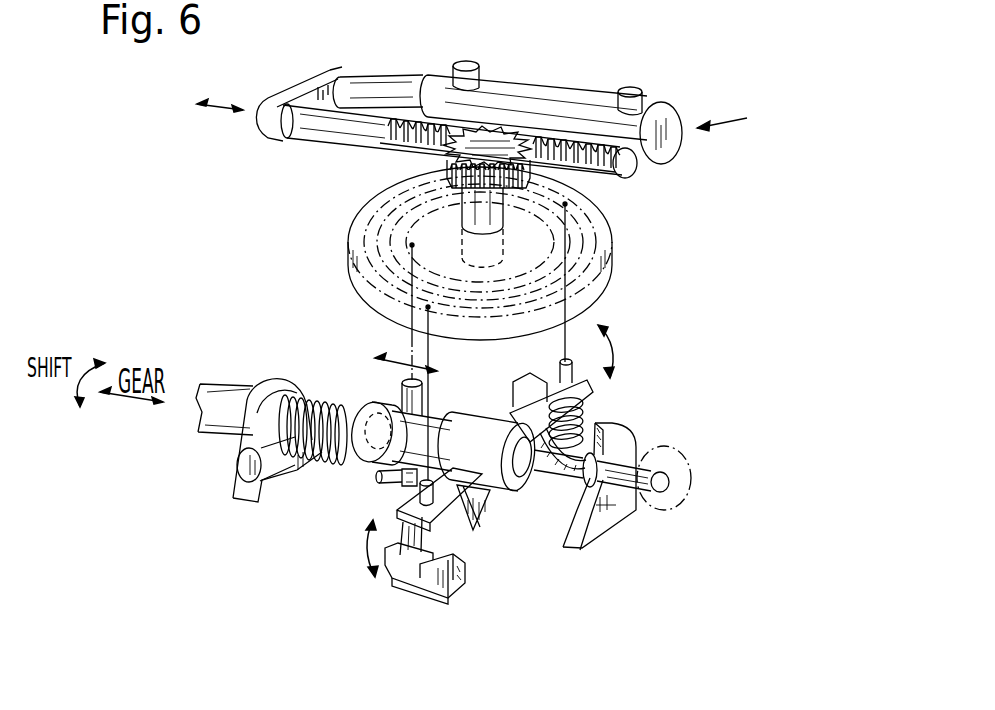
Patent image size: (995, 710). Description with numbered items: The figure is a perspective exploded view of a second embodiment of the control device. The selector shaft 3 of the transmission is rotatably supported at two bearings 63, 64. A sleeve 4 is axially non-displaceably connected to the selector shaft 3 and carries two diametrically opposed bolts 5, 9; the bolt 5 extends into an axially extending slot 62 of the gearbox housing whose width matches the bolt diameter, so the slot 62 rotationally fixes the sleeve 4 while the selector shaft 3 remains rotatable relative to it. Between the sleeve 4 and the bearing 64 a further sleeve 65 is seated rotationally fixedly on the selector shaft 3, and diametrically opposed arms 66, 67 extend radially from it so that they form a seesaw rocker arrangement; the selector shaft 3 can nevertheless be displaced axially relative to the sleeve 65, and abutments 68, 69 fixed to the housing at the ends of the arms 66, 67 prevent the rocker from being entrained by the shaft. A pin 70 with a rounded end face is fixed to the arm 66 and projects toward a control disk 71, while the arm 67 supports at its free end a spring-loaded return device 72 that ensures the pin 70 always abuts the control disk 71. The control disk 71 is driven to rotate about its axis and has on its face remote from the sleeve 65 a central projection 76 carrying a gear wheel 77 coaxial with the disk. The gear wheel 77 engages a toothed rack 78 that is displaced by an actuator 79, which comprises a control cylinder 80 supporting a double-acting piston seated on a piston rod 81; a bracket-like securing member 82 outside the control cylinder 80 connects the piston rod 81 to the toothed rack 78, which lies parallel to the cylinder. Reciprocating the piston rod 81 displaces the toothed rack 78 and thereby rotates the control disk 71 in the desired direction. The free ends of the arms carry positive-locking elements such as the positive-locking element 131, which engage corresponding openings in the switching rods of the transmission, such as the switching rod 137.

The selector shaft 3 is at (323, 463).
The sleeve 4 is at (390, 402).
The bolt 5 is at (405, 496).
The bolt 9 is at (423, 396).
The slot 62 is at (395, 481).
The bearing 63 is at (257, 425).
The bearing 64 is at (595, 528).
The sleeve 65 is at (503, 485).
The arm 66 is at (440, 513).
The arm 67 is at (583, 410).
The abutment 68 is at (533, 380).
The abutment 69 is at (487, 528).
The pin 70 is at (430, 483).
The control disk 71 is at (375, 210).
The return device 72 is at (580, 418).
The central projection 76 is at (455, 196).
The gear wheel 77 is at (443, 155).
The toothed rack 78 is at (447, 132).
The actuator 79 is at (739, 107).
The control cylinder 80 is at (667, 113).
The piston rod 81 is at (375, 97).
The bracket-like securing member 82 is at (308, 95).
The positive-locking element 131 is at (455, 587).
The switching rod 137 is at (437, 593).